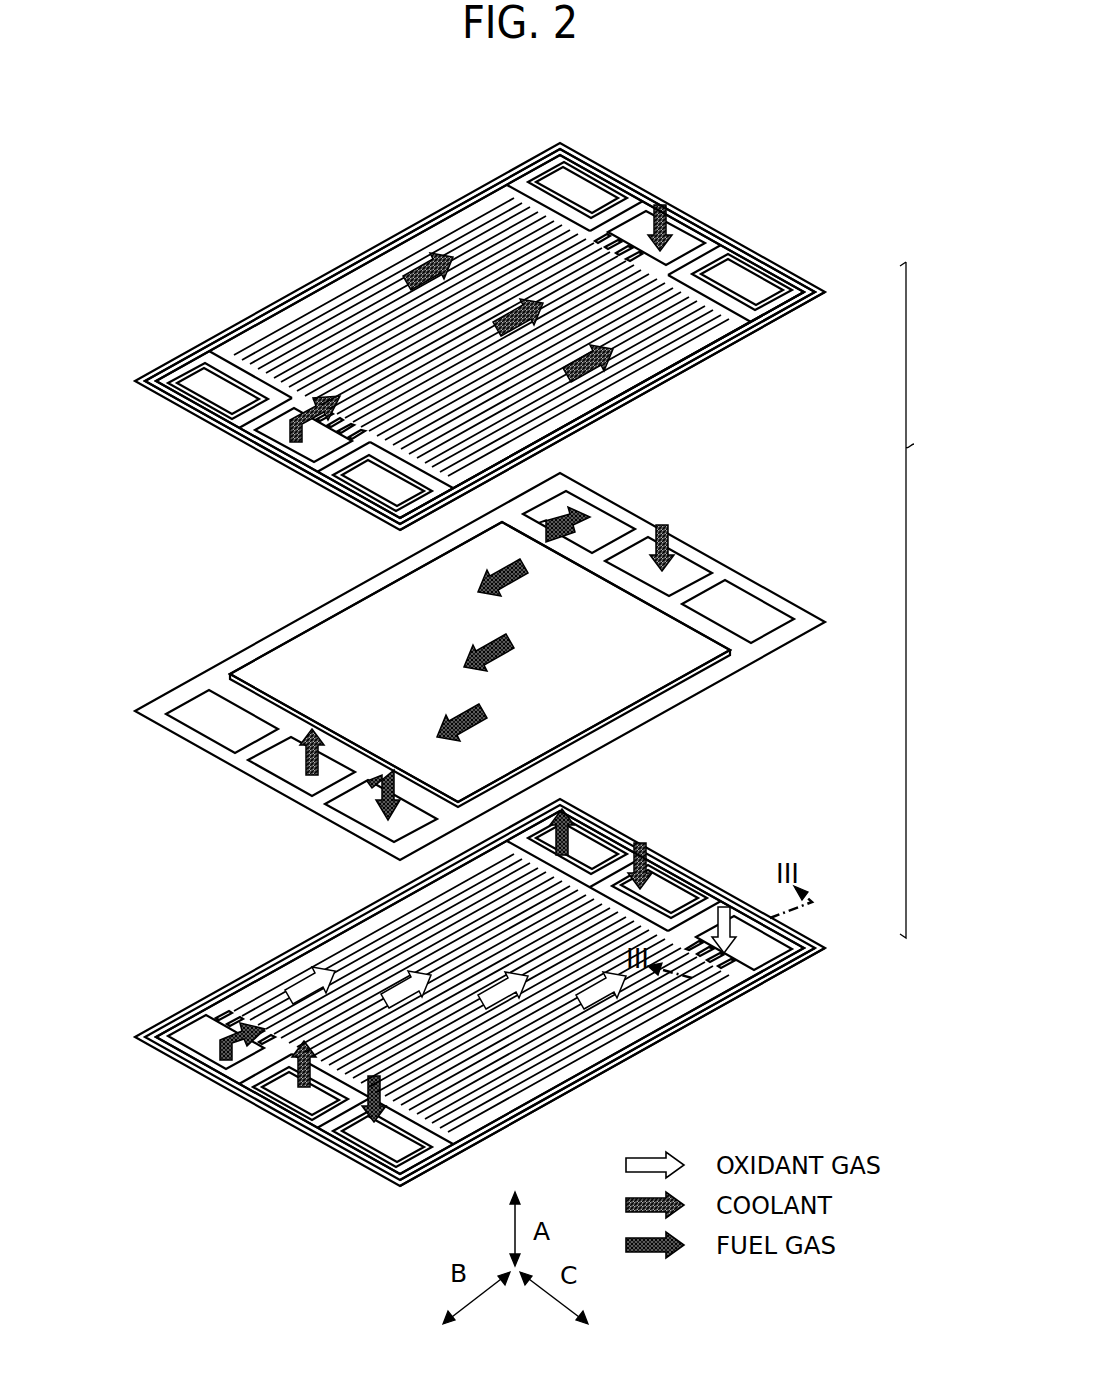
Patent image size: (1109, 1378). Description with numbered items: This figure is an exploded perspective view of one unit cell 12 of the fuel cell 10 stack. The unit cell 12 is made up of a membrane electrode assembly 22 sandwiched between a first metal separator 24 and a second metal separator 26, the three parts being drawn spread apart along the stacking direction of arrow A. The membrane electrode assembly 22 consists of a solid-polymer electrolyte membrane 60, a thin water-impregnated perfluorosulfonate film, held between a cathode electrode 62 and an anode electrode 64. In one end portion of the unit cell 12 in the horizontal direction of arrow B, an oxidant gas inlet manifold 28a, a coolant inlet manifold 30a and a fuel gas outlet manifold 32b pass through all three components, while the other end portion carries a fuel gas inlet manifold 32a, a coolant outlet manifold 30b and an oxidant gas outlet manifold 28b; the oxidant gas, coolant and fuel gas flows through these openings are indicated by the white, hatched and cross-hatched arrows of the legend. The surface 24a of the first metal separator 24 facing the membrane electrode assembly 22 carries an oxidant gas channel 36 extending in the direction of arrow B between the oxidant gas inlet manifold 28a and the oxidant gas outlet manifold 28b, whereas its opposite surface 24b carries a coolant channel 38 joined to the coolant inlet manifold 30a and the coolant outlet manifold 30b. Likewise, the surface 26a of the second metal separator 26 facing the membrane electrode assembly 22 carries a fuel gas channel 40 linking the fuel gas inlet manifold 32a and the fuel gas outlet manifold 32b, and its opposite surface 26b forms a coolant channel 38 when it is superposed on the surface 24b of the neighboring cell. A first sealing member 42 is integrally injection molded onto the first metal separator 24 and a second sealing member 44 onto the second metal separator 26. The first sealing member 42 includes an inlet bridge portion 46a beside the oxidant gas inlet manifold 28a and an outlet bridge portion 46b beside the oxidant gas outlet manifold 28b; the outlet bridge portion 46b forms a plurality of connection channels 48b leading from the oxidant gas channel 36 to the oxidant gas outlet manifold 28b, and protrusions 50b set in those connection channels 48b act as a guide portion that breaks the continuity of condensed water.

The fuel cell 10 is at (534, 74).
The unit cell 12 is at (922, 600).
The membrane electrode assembly 22 is at (830, 603).
The first metal separator 24 is at (833, 930).
The surface of the first metal separator 24a is at (695, 1000).
The surface of the first metal separator 24b is at (672, 1025).
The second metal separator 26 is at (828, 282).
The surface of the second metal separator 26a is at (688, 372).
The surface of the second metal separator 26b is at (700, 342).
The oxidant gas inlet manifold 28a is at (222, 406).
The oxidant gas outlet manifold 28b is at (780, 290).
The coolant inlet manifold 30a is at (310, 452).
The coolant outlet manifold 30b is at (690, 238).
The fuel gas inlet manifold 32a is at (605, 196).
The fuel gas outlet manifold 32b is at (392, 492).
The oxidant gas channel 36 is at (300, 972).
The coolant channel 38 is at (302, 318).
The fuel gas channel 40 is at (365, 285).
The first sealing member 42 is at (615, 1060).
The second sealing member 44 is at (635, 400).
The inlet bridge portion 46a is at (222, 988).
The outlet bridge portion 46b is at (738, 992).
The connection channels 48b is at (700, 940).
The protrusions 50b is at (748, 978).
The solid-polymer electrolyte membrane 60 is at (712, 676).
The cathode electrode 62 is at (272, 672).
The anode electrode 64 is at (322, 648).